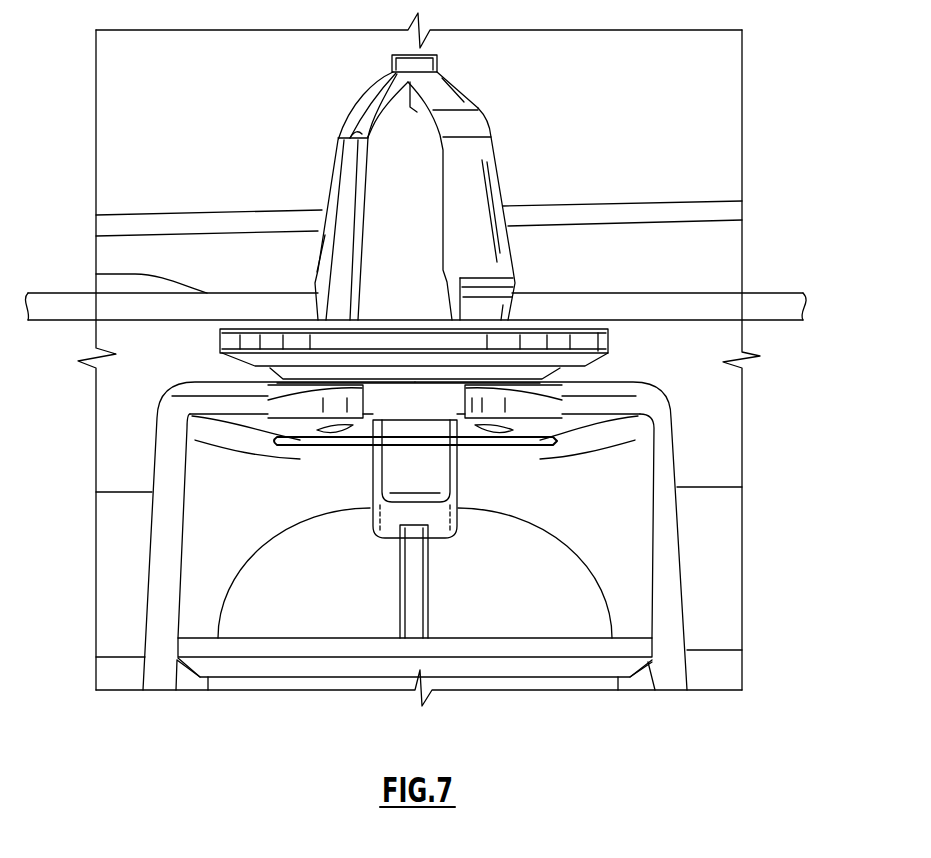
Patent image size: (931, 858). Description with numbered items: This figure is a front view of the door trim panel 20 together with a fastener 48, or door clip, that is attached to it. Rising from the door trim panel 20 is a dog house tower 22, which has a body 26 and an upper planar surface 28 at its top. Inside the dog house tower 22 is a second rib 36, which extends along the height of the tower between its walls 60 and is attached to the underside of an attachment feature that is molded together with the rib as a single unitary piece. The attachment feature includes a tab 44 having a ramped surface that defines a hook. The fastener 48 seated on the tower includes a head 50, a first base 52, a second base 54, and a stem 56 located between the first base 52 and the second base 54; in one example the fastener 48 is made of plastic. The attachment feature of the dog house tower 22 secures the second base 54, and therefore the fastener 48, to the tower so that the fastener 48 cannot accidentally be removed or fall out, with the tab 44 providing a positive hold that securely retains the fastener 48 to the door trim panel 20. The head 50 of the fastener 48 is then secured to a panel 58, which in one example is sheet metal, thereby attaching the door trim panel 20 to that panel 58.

The door trim panel 20 is at (722, 435).
The dog house tower 22 is at (165, 538).
The body 26 is at (160, 595).
The upper planar surface 28 is at (208, 390).
The second rib 36 is at (402, 585).
The tab 44 is at (432, 477).
The fastener 48 is at (387, 190).
The head 50 is at (475, 177).
The first base 52 is at (595, 343).
The second base 54 is at (537, 442).
The stem 56 is at (457, 405).
The panel 58 is at (767, 300).
The walls 60 is at (667, 645).